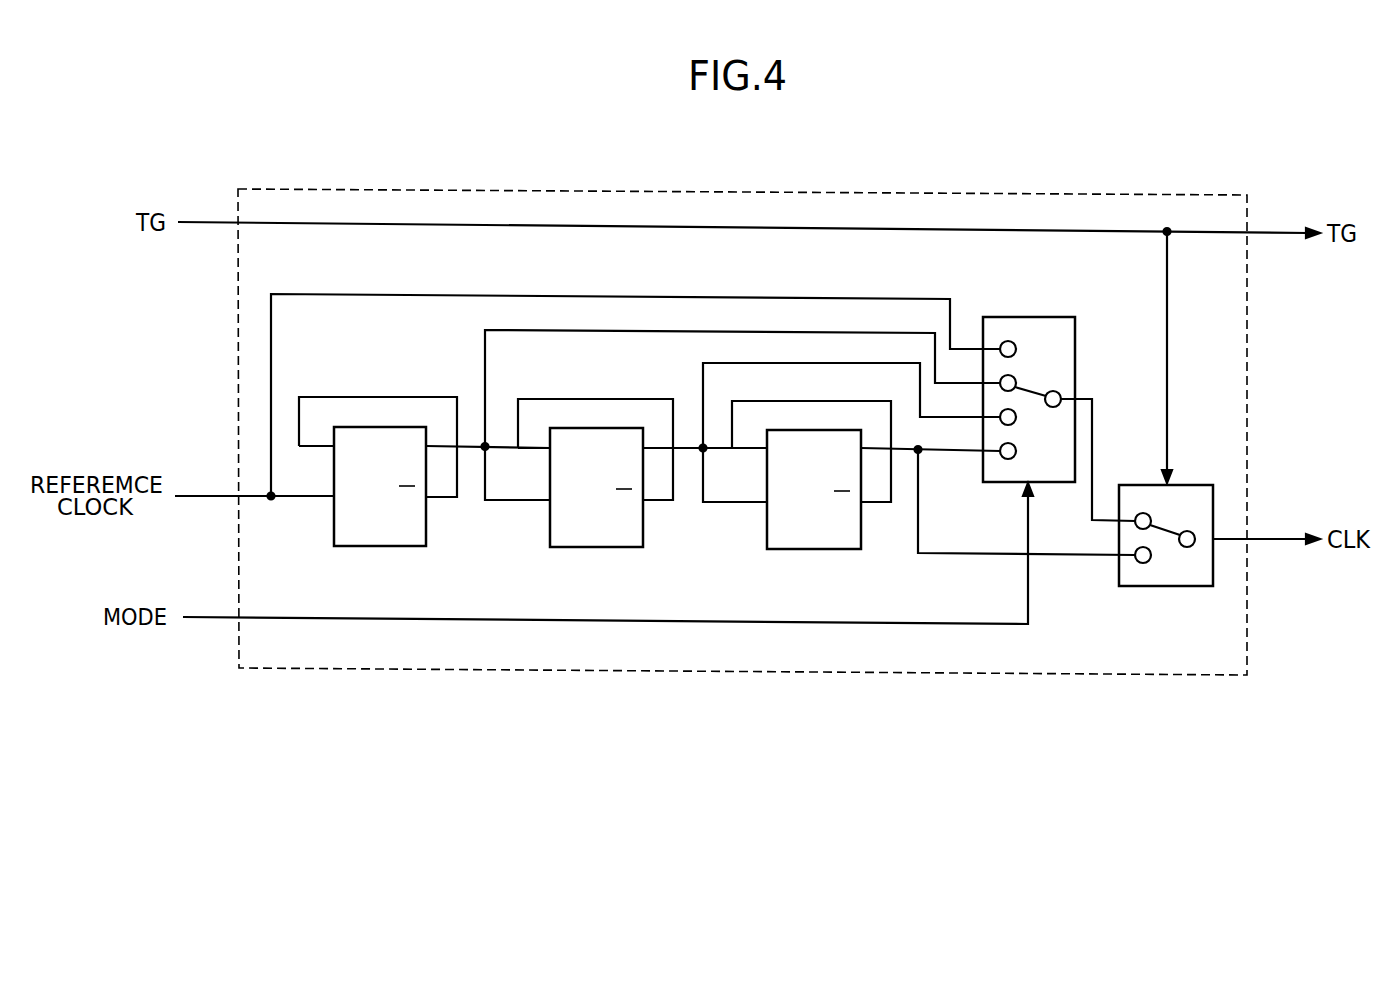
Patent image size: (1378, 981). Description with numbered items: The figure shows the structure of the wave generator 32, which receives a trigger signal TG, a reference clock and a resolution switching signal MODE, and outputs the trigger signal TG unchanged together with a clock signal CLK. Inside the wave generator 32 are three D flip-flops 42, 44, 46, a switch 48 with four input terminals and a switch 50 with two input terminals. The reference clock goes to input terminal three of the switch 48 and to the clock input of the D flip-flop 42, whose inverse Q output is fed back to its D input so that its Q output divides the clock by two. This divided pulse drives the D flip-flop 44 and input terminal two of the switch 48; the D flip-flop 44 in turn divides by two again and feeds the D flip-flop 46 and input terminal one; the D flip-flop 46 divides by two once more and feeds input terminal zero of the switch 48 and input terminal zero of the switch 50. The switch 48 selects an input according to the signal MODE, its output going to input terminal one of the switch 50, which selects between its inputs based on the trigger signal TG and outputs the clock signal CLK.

The wave generator 32 is at (742, 190).
The D flip-flop 42 is at (382, 547).
The D flip-flop 44 is at (598, 548).
The D flip-flop 46 is at (815, 550).
The switch 48 is at (1030, 317).
The switch 50 is at (1167, 586).